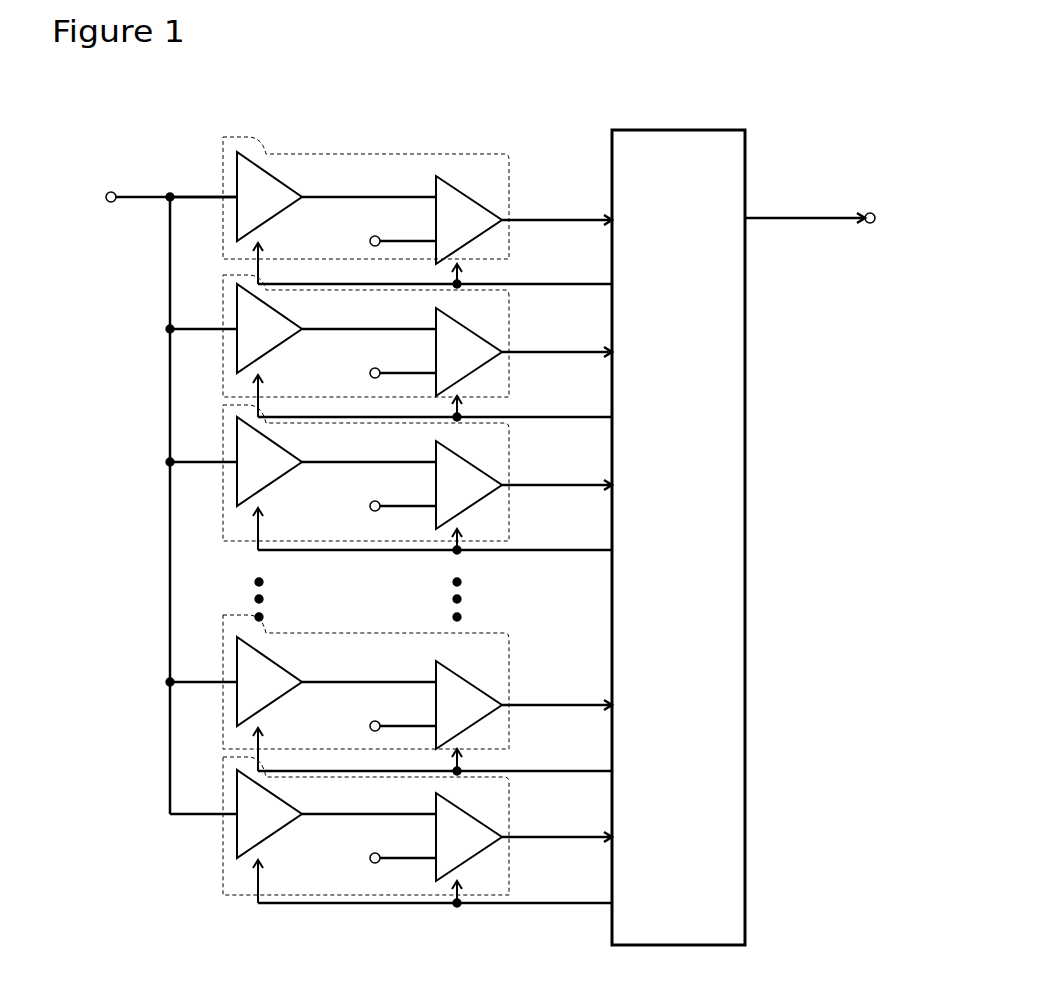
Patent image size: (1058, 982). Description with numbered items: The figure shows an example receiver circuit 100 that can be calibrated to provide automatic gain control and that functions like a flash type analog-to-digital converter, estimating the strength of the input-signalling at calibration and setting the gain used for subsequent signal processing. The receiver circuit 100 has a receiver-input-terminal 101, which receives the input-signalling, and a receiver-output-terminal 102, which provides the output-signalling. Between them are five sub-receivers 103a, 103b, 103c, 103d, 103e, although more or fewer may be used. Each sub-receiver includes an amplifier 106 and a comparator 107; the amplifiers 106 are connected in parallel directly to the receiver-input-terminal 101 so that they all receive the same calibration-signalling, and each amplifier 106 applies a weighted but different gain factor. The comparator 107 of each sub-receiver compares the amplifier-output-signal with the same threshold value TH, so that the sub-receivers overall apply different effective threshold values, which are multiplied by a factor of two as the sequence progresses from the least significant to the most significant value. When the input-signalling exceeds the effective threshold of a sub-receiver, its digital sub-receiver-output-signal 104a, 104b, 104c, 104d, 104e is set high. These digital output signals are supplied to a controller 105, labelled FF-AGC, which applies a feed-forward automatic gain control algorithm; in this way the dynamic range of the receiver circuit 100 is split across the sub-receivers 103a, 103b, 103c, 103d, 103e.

The receiver circuit 100 is at (556, 67).
The receiver-input-terminal 101 is at (113, 187).
The receiver-output-terminal 102 is at (865, 228).
The sub-receiver 103a is at (364, 832).
The sub-receiver 103b is at (351, 695).
The sub-receiver 103c is at (348, 479).
The sub-receiver 103d is at (356, 348).
The sub-receiver 103e is at (354, 185).
The digital sub-receiver-output-signal 104a is at (557, 842).
The digital sub-receiver-output-signal 104b is at (557, 710).
The digital sub-receiver-output-signal 104c is at (557, 489).
The digital sub-receiver-output-signal 104d is at (557, 356).
The digital sub-receiver-output-signal 104e is at (557, 224).
The controller 105 is at (745, 611).
The amplifier 106 is at (268, 168).
The comparator 107 is at (447, 180).